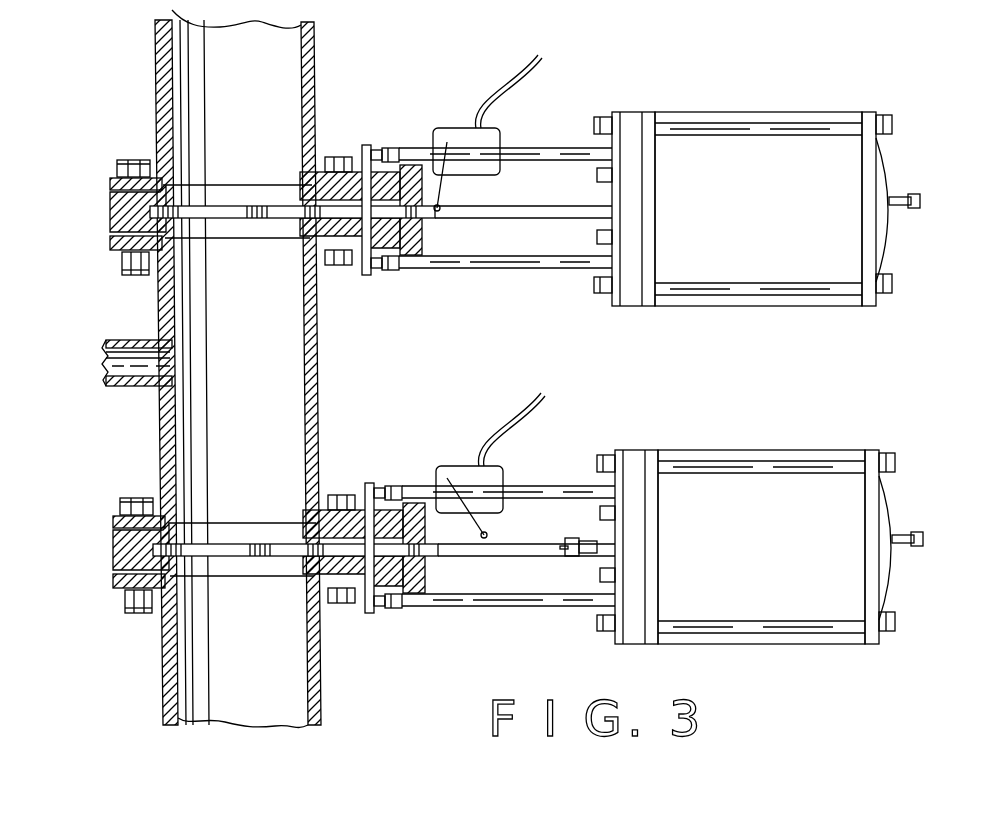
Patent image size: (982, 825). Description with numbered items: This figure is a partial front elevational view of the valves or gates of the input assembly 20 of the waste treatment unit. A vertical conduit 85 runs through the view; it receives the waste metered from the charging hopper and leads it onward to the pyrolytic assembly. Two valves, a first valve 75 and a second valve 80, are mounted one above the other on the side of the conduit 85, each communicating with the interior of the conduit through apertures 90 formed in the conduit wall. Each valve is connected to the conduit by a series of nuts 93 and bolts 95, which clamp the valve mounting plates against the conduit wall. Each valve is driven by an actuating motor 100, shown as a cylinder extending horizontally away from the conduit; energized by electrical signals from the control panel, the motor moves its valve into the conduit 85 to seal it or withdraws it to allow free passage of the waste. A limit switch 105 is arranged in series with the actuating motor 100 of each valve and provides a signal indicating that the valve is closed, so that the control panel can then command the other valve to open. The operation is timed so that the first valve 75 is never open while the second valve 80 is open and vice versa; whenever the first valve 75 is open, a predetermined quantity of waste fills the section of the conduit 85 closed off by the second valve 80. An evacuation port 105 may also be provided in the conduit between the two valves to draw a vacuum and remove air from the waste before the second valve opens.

The input assembly 20 is at (138, 114).
The first valve 75 is at (368, 120).
The second valve 80 is at (373, 465).
The conduit 85 is at (160, 433).
The apertures 90 is at (300, 222).
The nuts 93 is at (150, 595).
The bolts 95 is at (150, 497).
The actuating motors 100 is at (710, 140).
The limit switch 105 is at (135, 340).